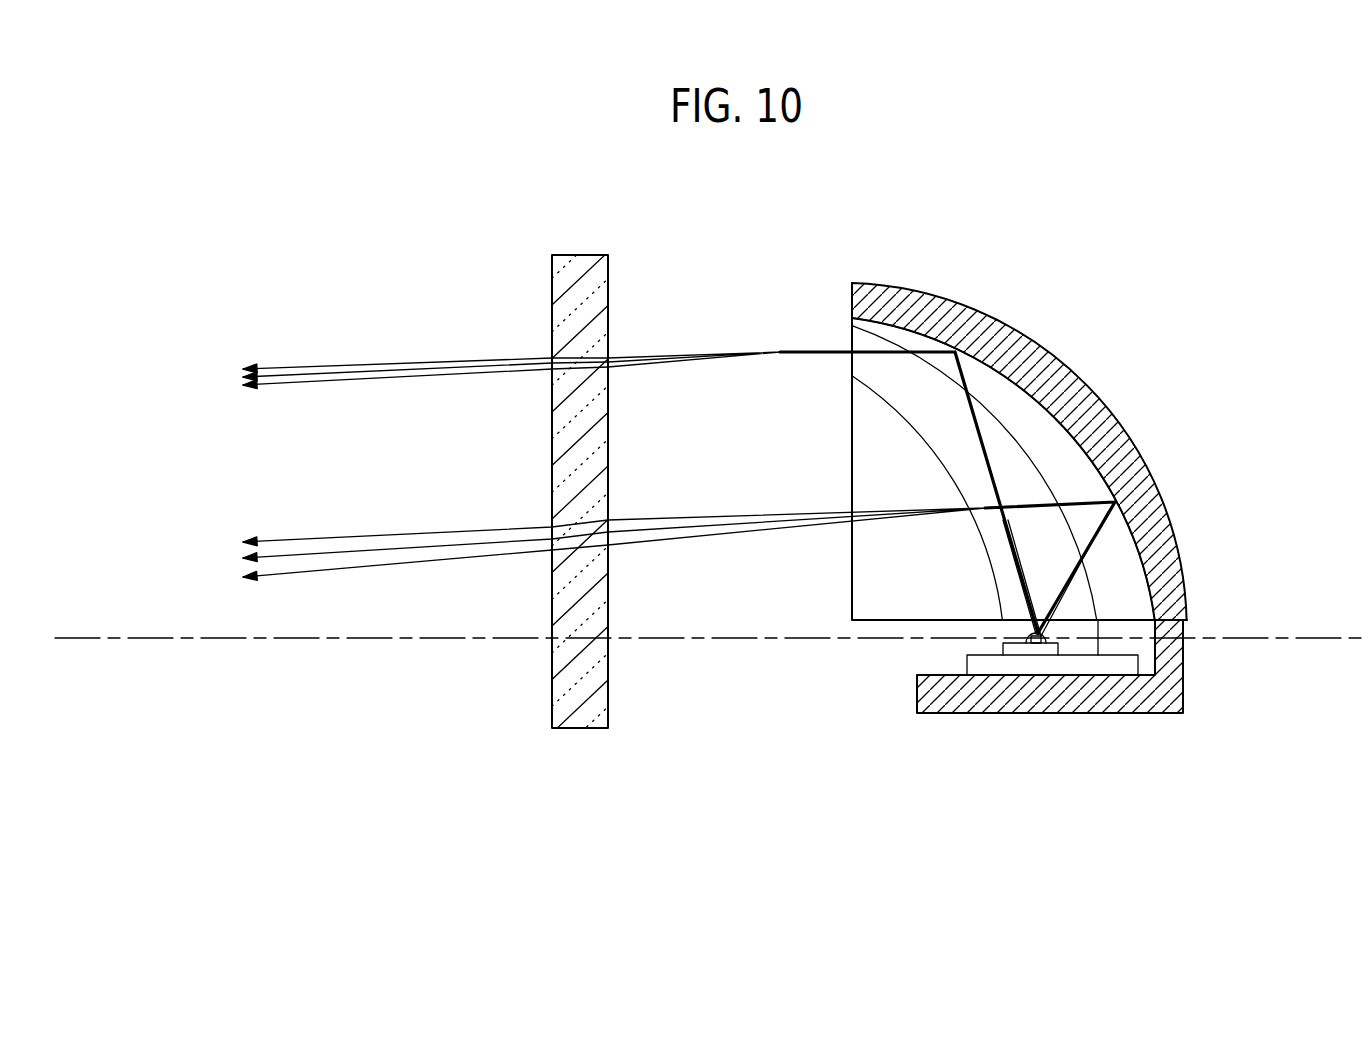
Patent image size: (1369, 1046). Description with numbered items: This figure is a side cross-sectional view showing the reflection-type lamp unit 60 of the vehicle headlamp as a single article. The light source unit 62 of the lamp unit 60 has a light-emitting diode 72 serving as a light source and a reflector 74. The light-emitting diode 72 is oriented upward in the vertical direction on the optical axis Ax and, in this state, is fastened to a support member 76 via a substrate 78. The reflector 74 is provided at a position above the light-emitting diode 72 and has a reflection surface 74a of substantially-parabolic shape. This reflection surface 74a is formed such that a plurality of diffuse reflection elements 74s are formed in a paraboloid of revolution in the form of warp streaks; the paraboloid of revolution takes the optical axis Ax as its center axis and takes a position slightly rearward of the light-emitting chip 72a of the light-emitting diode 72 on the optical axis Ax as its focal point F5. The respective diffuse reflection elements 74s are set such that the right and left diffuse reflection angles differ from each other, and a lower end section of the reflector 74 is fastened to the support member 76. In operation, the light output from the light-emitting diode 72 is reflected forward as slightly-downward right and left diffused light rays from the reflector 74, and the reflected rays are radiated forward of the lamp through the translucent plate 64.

The lamp unit 60 is at (968, 212).
The light source unit 62 is at (790, 277).
The translucent plate 64 is at (550, 290).
The light-emitting diode 72 is at (1048, 634).
The light-emitting chip 72a is at (990, 633).
The reflector 74 is at (1107, 415).
The diffuse reflection elements 74s is at (933, 418).
The reflection surface 74a is at (1050, 413).
The support member 76 is at (1007, 715).
The substrate 78 is at (1082, 681).
The focal point F5 is at (1058, 628).
The optical axis Ax is at (193, 638).